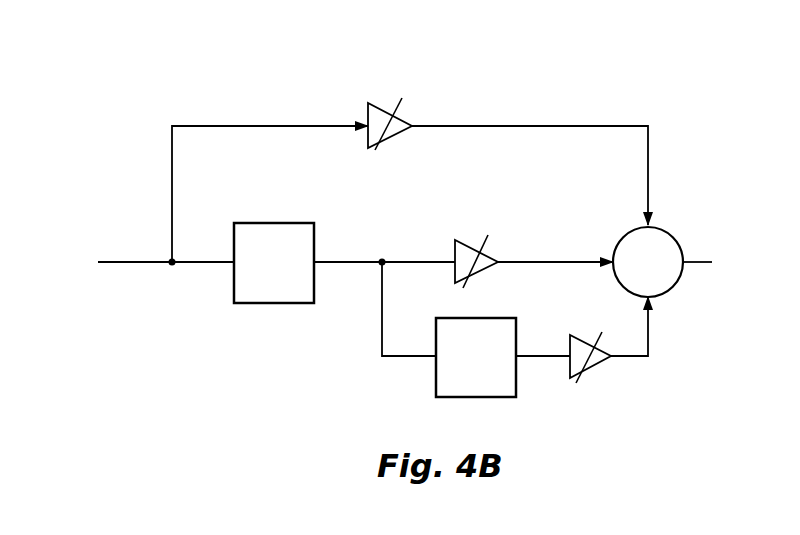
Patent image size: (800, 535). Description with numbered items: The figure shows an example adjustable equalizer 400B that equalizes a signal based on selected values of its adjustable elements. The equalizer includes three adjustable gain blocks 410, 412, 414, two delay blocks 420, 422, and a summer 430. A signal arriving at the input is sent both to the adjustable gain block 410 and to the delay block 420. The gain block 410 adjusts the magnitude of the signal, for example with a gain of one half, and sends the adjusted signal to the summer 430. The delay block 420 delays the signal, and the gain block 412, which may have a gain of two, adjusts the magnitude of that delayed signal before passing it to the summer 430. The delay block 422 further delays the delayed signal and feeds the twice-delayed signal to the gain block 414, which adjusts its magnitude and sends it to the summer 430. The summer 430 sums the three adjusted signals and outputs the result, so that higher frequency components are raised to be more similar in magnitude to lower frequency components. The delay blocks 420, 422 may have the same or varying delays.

The adjustable equalizer 400B is at (505, 65).
The adjustable gain block 410 is at (368, 110).
The adjustable gain block 412 is at (455, 250).
The adjustable gain block 414 is at (595, 365).
The delay block 420 is at (234, 283).
The delay block 422 is at (436, 380).
The summer 430 is at (668, 232).